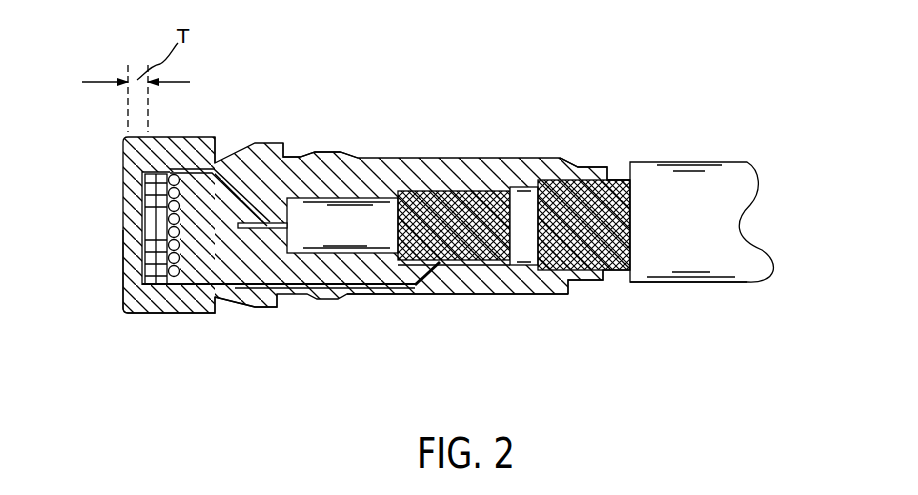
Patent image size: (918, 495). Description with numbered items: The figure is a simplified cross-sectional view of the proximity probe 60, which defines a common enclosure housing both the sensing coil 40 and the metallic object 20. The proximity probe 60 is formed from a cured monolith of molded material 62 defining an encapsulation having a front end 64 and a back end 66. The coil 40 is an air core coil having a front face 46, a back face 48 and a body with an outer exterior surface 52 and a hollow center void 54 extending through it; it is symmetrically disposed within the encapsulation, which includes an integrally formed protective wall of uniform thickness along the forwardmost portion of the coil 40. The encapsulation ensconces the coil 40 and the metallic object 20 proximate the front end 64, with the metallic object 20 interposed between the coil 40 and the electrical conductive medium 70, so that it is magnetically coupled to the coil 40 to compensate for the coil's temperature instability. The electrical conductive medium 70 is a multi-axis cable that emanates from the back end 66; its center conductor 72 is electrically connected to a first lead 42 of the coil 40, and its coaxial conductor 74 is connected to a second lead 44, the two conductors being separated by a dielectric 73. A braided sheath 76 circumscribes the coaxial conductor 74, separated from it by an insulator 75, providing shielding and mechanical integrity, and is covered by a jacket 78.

The metallic object 20 is at (240, 153).
The coil 40 is at (125, 297).
The first lead 42 is at (287, 157).
The second lead 44 is at (253, 307).
The front face 46 is at (142, 207).
The back face 48 is at (212, 137).
The outer exterior surface 52 is at (152, 162).
The center void 54 is at (142, 228).
The proximity probe 60 is at (523, 157).
The molded material 62 is at (377, 165).
The front end 64 is at (122, 163).
The back end 66 is at (612, 168).
The electrical conductive medium 70 is at (736, 150).
The center conductor 72 is at (225, 295).
The dielectric 73 is at (325, 273).
The coaxial conductor 74 is at (443, 190).
The insulator 75 is at (490, 293).
The braided sheath 76 is at (547, 292).
The jacket 78 is at (648, 283).